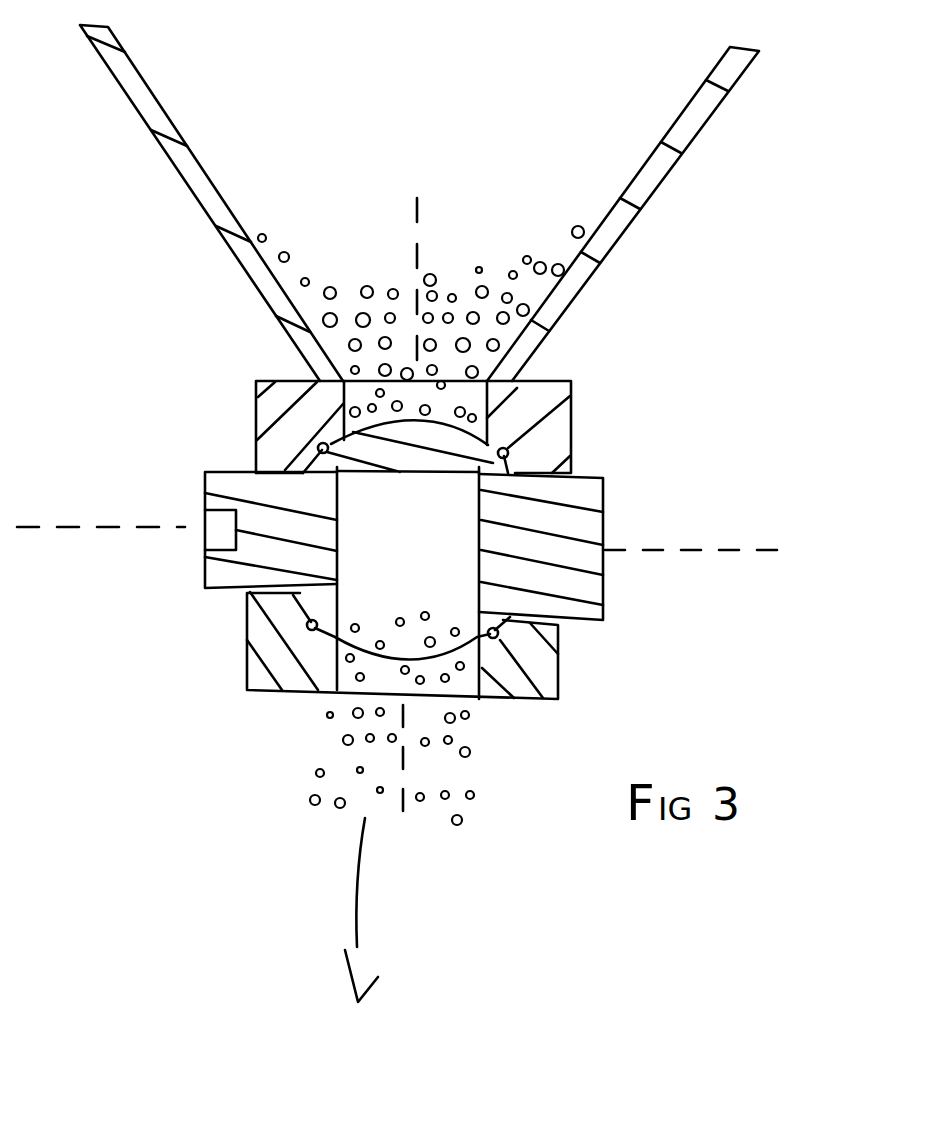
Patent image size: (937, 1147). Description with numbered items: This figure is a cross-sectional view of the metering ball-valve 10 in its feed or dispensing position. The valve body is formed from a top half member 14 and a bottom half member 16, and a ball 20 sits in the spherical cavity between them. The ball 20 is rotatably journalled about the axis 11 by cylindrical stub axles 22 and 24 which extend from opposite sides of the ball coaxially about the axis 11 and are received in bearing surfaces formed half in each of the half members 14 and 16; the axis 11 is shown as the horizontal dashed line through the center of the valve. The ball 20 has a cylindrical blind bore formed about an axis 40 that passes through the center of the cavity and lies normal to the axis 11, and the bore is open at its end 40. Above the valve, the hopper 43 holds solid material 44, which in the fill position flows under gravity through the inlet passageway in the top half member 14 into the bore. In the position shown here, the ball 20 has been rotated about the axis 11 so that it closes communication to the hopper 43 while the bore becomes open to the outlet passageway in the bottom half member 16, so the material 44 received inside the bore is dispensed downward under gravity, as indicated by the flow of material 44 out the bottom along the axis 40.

The metering ball-valve 10 is at (122, 307).
The axis 11 is at (801, 555).
The top half member 14 is at (266, 402).
The bottom half member 16 is at (263, 653).
The ball 20 is at (543, 517).
The cylindrical stub axle 22 is at (224, 577).
The cylindrical stub axle 24 is at (585, 595).
The axis of the blind bore / open end 40 is at (398, 853).
The hopper 43 is at (663, 186).
The material 44 is at (352, 256).